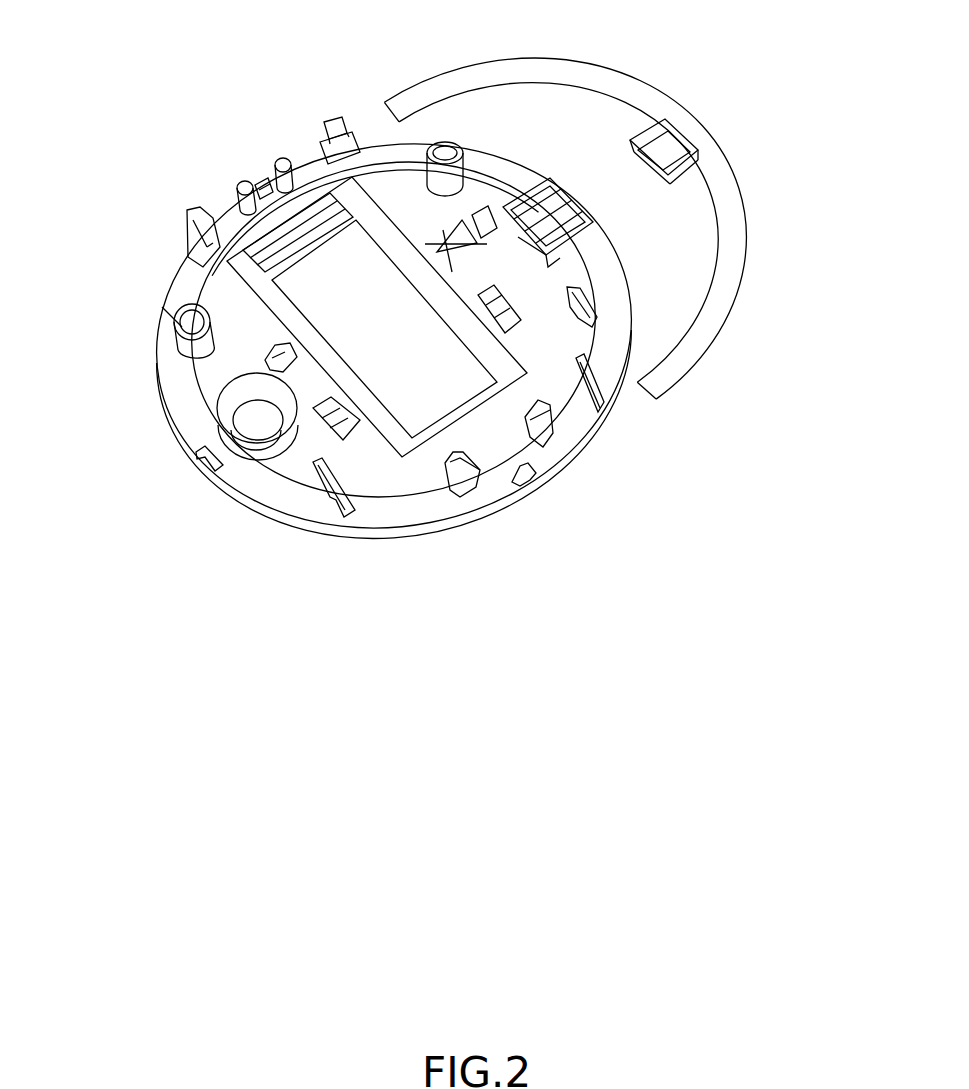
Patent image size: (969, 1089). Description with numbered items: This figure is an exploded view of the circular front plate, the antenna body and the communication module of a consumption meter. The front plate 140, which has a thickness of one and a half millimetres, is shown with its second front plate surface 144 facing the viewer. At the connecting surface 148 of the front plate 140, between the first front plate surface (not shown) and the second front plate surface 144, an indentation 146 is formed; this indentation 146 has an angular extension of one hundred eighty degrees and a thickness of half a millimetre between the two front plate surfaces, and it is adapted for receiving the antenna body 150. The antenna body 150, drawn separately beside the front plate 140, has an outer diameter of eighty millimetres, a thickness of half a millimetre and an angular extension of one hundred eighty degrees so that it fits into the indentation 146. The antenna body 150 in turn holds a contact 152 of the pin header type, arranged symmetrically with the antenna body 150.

The front plate 140 is at (223, 210).
The second front plate surface 144 is at (220, 300).
The indentation 146 is at (598, 412).
The connecting surface 148 is at (582, 447).
The antenna body 150 is at (628, 77).
The contact 152 is at (685, 150).